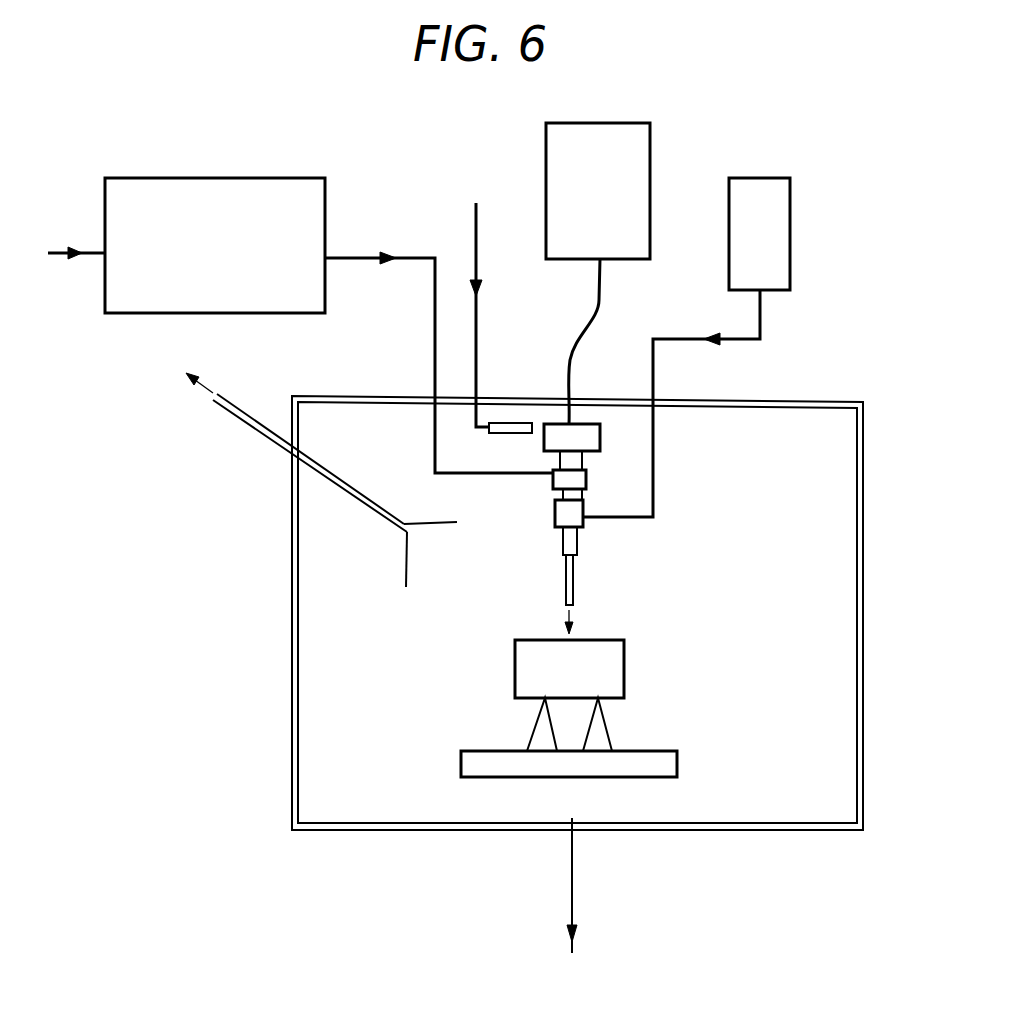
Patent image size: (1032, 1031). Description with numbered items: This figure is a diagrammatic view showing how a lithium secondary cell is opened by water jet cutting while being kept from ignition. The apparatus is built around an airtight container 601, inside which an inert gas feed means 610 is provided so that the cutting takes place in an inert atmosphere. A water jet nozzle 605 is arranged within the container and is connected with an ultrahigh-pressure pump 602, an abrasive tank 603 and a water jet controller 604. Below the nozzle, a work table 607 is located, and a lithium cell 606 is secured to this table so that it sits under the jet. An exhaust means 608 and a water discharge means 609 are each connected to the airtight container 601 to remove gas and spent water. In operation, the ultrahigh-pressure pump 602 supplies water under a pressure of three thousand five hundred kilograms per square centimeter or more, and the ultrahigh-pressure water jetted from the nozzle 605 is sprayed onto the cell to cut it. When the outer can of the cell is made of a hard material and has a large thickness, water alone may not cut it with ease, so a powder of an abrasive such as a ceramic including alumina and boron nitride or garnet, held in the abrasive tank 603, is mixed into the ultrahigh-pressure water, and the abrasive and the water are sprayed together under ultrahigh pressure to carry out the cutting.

The airtight container 601 is at (705, 830).
The ultrahigh-pressure pump 602 is at (275, 178).
The abrasive tank 603 is at (768, 178).
The water jet controller 604 is at (650, 171).
The water jet nozzle 605 is at (574, 582).
The lithium cell 606 is at (624, 665).
The work table 607 is at (493, 777).
The exhaust means 608 is at (260, 422).
The water discharge means 609 is at (575, 948).
The inert gas feed means 610 is at (476, 347).